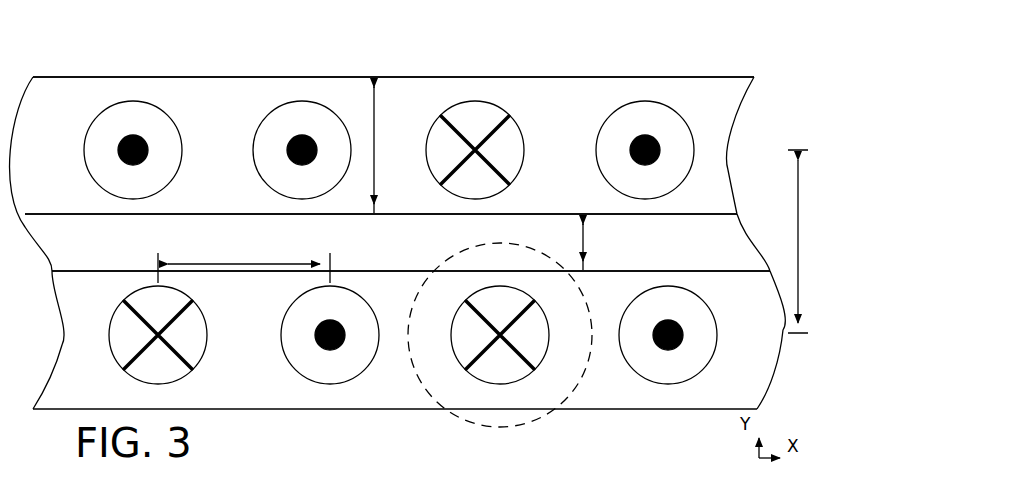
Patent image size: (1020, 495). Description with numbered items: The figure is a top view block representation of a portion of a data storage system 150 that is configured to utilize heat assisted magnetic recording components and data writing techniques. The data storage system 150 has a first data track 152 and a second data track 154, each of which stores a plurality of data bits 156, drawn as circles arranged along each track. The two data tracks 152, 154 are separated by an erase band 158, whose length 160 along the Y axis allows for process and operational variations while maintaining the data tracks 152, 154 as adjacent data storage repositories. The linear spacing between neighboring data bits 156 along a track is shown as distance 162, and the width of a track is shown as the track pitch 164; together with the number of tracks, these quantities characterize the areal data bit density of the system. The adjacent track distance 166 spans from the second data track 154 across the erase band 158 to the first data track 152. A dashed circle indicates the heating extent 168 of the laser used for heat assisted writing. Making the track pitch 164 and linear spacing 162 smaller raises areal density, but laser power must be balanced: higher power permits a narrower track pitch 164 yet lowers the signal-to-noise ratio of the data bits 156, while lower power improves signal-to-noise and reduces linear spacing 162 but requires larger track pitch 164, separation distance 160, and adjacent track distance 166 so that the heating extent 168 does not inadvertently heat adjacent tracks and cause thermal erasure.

The data storage system 150 is at (733, 52).
The first data track 152 is at (92, 401).
The second data track 154 is at (92, 100).
The data bits 156 is at (614, 117).
The erase band 158 is at (92, 250).
The length of erase band 160 is at (604, 242).
The linear data bit spacing 162 is at (244, 259).
The data track pitch 164 is at (395, 145).
The adjacent track distance 166 is at (814, 241).
The heating extent 168 is at (544, 412).